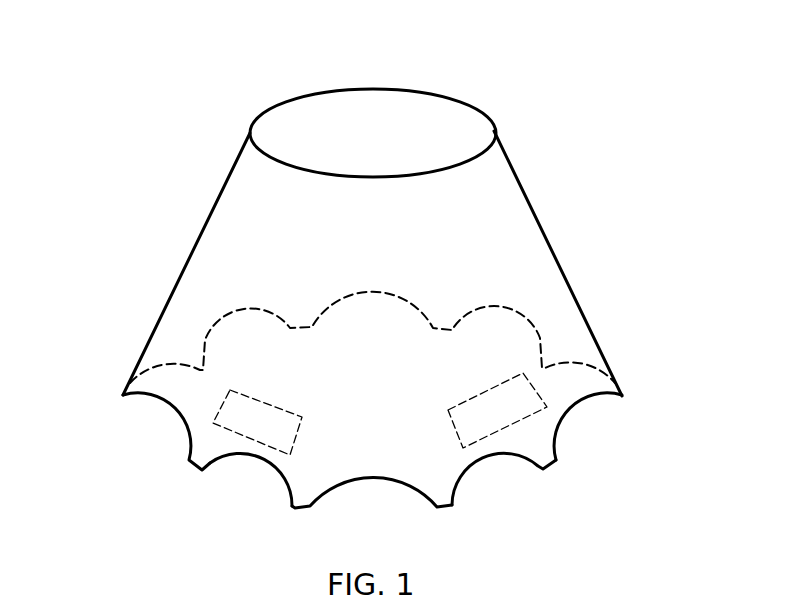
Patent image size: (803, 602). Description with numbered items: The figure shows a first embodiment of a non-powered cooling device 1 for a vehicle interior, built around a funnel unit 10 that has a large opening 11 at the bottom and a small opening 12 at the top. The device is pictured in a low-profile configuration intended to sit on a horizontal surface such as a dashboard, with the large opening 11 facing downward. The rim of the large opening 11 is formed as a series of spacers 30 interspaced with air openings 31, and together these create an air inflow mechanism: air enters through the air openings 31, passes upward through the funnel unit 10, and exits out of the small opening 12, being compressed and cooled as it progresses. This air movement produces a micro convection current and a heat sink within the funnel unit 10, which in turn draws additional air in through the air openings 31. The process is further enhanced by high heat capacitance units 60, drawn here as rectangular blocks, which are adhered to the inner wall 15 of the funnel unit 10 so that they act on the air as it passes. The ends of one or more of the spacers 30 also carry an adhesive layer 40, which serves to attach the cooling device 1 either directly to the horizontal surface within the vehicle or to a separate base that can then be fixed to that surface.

The non-powered cooling device 1 is at (128, 82).
The funnel unit 10 is at (193, 250).
The large opening 11 is at (570, 414).
The small opening 12 is at (459, 101).
The inner wall 15 is at (332, 113).
The spacers 30 is at (188, 461).
The air openings 31 is at (252, 459).
The adhesive layer 40 is at (448, 507).
The high heat capacitance units 60 is at (253, 420).